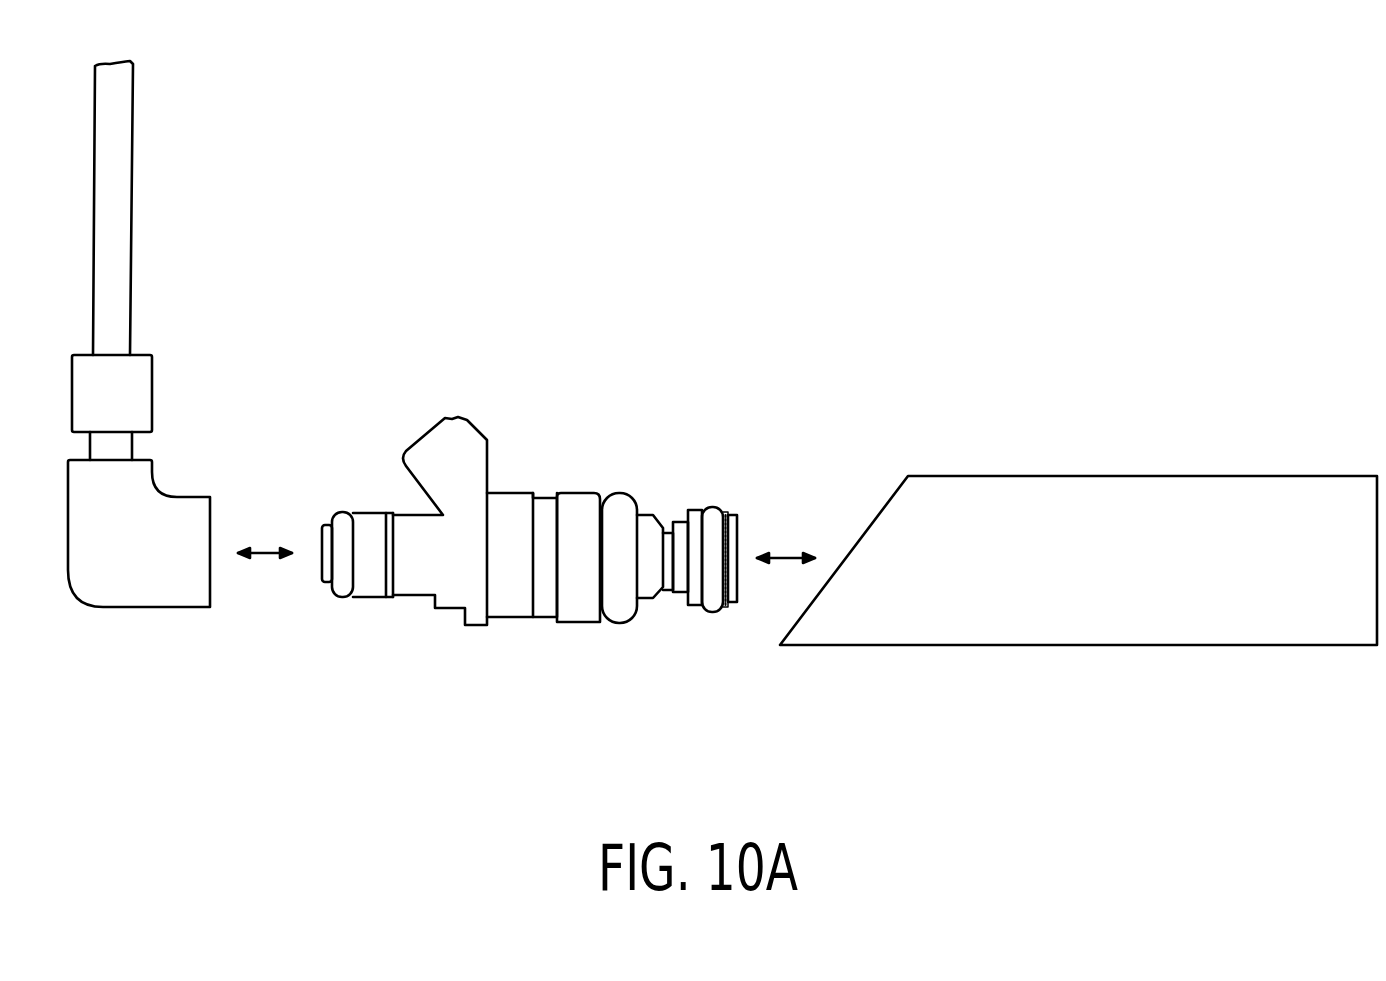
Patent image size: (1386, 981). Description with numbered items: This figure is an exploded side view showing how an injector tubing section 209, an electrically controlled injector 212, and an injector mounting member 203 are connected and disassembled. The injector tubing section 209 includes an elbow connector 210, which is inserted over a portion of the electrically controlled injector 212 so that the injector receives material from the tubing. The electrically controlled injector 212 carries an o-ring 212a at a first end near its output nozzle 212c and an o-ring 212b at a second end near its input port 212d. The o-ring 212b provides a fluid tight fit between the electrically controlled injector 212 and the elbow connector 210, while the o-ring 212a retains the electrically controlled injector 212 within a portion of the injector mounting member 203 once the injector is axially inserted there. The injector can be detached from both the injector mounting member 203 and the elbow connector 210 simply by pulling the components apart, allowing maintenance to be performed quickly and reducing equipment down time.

The injector tubing section 209 is at (133, 176).
The elbow connector 210 is at (182, 493).
The electrically controlled injector 212 is at (567, 492).
The o-ring 212a is at (710, 503).
The o-ring 212b is at (343, 510).
The output nozzle 212c is at (750, 532).
The input port 212d is at (312, 560).
The injector mounting member 203 is at (1052, 475).